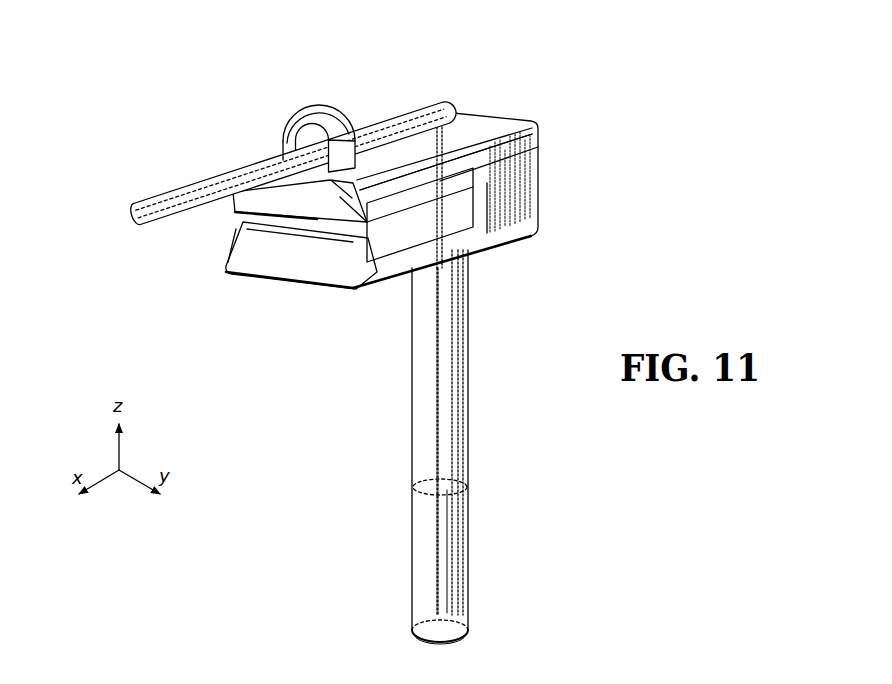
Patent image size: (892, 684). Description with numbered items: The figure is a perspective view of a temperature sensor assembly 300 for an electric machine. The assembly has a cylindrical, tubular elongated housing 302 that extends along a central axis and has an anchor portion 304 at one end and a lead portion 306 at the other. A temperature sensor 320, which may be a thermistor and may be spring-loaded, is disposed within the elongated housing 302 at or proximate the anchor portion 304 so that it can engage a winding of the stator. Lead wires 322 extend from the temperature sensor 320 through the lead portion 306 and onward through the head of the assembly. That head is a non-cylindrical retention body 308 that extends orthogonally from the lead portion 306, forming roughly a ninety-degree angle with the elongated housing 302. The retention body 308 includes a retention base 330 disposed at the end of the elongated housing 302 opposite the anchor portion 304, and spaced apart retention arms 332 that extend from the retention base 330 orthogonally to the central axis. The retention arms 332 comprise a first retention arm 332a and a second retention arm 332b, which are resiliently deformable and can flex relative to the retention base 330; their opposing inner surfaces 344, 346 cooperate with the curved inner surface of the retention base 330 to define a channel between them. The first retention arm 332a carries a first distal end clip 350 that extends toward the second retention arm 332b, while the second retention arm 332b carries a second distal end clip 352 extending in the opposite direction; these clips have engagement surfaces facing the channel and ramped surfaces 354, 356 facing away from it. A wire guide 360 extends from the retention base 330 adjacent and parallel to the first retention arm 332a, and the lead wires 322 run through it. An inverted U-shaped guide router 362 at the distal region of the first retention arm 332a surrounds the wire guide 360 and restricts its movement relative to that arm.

The temperature sensor assembly 300 is at (170, 72).
The elongated housing 302 is at (390, 430).
The anchor portion 304 is at (413, 510).
The lead portion 306 is at (468, 318).
The retention body 308 is at (480, 117).
The temperature sensor 320 is at (466, 642).
The lead wires 322 is at (470, 377).
The retention base 330 is at (522, 236).
The retention arms 332 is at (200, 230).
The first retention arm 332a is at (230, 257).
The second retention arm 332b is at (257, 260).
The inner surface of first retention arm 344 is at (538, 147).
The inner surface of second retention arm 346 is at (400, 228).
The first distal end clip 350 is at (370, 278).
The second distal end clip 352 is at (458, 204).
The ramped surface 354 is at (317, 214).
The ramped surface 356 is at (307, 270).
The wire guide 360 is at (203, 177).
The guide router 362 is at (314, 104).